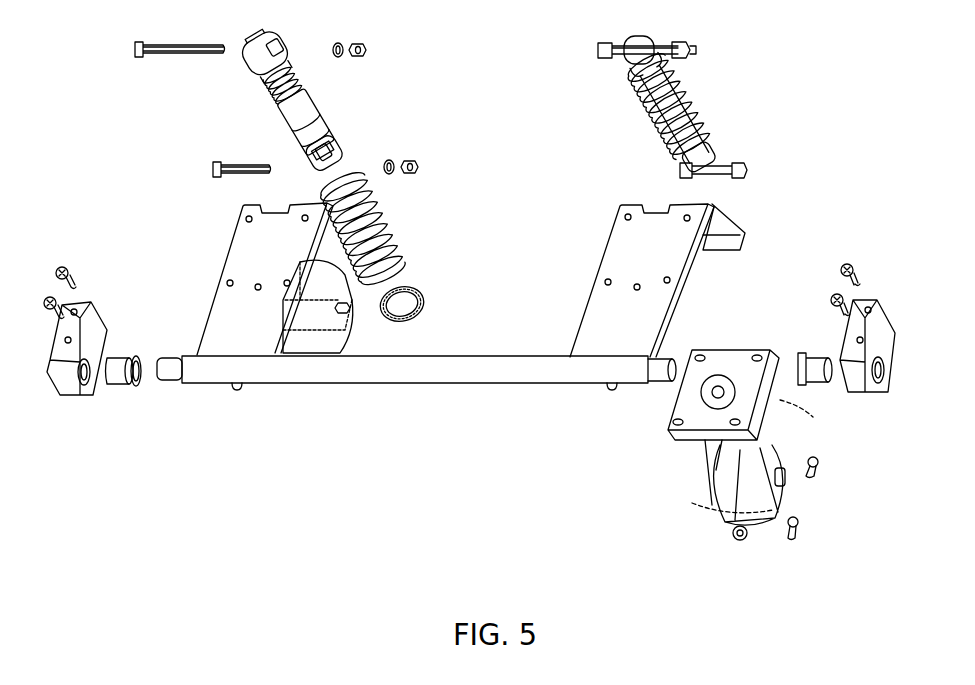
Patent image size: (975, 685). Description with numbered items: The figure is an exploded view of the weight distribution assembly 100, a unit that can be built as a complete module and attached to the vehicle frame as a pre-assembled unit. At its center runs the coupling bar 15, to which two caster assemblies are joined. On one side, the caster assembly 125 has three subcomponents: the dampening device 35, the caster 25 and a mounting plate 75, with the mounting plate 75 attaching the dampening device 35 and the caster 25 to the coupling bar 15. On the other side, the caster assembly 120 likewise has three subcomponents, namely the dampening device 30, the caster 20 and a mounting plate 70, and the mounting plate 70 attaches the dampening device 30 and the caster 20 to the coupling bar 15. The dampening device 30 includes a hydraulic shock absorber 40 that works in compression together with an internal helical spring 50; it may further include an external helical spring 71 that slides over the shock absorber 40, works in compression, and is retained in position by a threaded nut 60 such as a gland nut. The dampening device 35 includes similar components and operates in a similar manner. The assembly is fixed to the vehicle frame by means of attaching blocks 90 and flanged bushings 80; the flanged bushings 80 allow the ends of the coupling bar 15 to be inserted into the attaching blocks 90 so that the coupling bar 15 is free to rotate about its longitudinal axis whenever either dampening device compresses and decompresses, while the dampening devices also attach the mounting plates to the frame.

The coupling bar 15 is at (412, 387).
The caster 20 is at (308, 340).
The caster 25 is at (717, 522).
The dampening device 30 is at (413, 98).
The dampening device 35 is at (707, 112).
The hydraulic shock absorber 40 is at (323, 118).
The internal helical spring 50 is at (300, 80).
The threaded nut 60 is at (427, 293).
The mounting plate 70 is at (222, 252).
The external helical spring 71 is at (327, 203).
The mounting plate 75 is at (607, 230).
The flanged bushings 80 is at (122, 387).
The attaching blocks 90 is at (70, 397).
The weight distribution assembly 100 is at (453, 458).
The caster assembly 120 is at (187, 141).
The caster assembly 125 is at (777, 177).